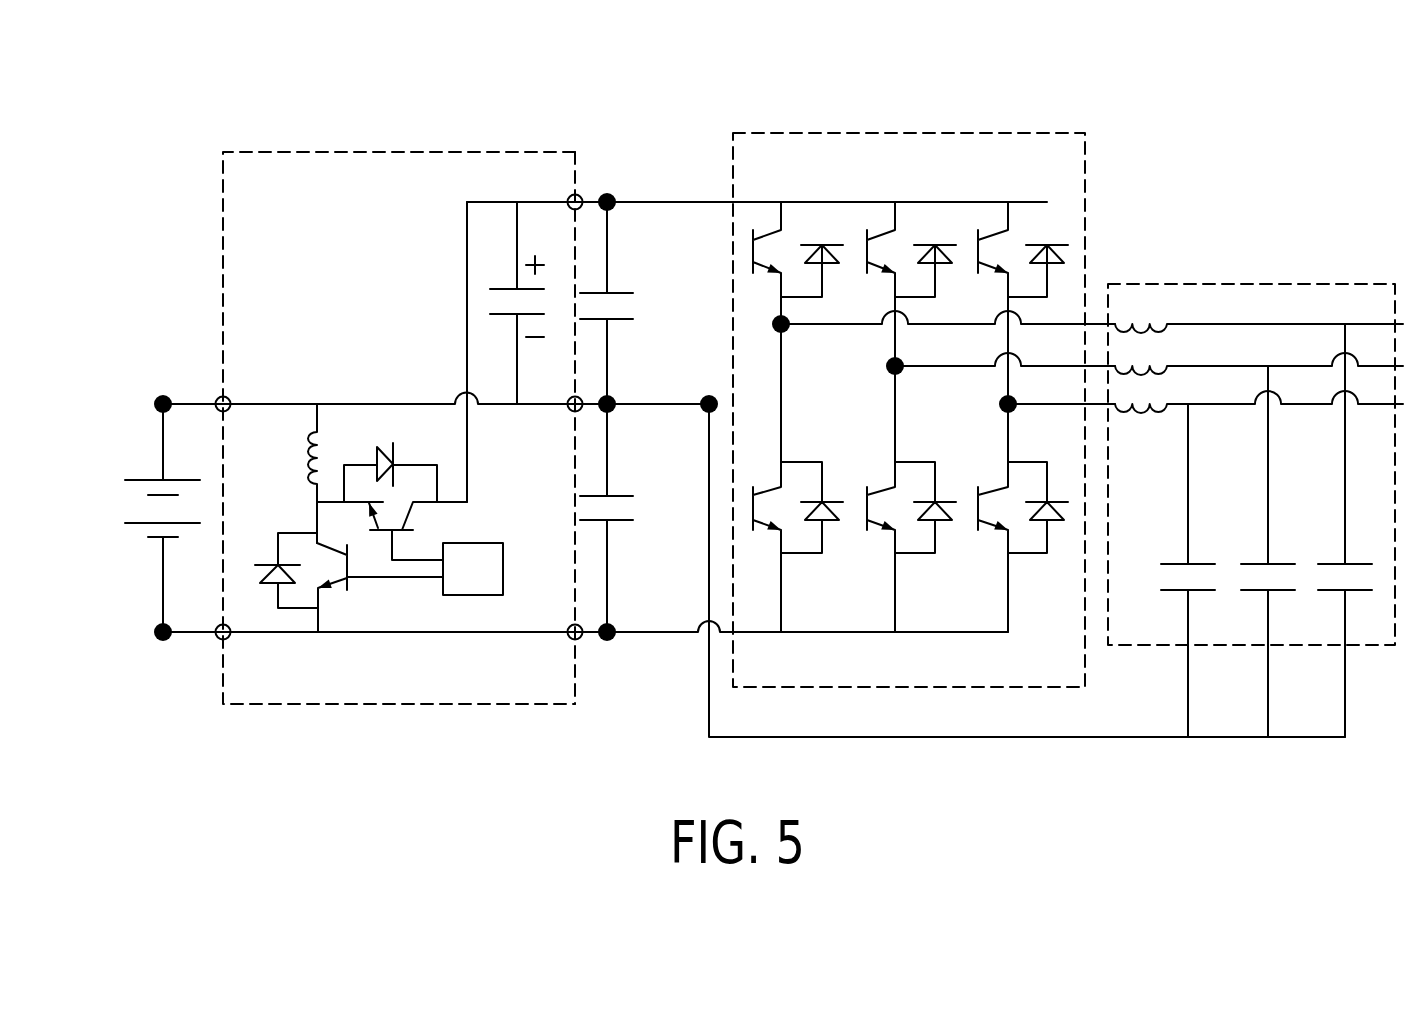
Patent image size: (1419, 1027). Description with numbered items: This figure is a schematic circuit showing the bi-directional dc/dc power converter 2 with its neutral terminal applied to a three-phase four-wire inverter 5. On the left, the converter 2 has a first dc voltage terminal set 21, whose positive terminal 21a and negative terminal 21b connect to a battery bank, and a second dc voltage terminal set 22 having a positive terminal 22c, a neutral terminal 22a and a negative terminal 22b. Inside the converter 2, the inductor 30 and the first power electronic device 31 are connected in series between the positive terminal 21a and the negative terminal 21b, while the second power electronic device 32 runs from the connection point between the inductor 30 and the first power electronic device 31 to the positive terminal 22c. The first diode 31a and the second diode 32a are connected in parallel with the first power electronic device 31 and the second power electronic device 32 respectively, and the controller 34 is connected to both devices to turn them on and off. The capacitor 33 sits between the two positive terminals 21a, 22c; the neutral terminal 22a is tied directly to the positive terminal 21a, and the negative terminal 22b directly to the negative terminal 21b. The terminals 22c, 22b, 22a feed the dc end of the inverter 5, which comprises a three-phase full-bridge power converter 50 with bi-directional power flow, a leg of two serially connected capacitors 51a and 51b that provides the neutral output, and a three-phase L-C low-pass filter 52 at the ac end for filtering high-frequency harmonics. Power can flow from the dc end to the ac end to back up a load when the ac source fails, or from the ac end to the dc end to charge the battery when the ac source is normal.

The bi-directional dc/dc power converter 2 is at (470, 152).
The three-phase four-wire inverter 5 is at (1060, 745).
The first dc voltage terminal set 21 is at (213, 472).
The positive terminal 21a is at (248, 390).
The negative terminal 21b is at (248, 647).
The second dc voltage terminal set 22 is at (575, 550).
The neutral terminal 22a is at (557, 419).
The negative terminal 22b is at (556, 651).
The positive terminal 22c is at (557, 218).
The inductor 30 is at (291, 473).
The first power electronic device 31 is at (380, 587).
The first diode 31a is at (276, 570).
The second power electronic device 32 is at (392, 531).
The second diode 32a is at (390, 458).
The capacitor 33 is at (511, 303).
The controller 34 is at (492, 569).
The three-phase full-bridge power converter 50 is at (924, 394).
The capacitor 51a is at (631, 298).
The capacitor 51b is at (632, 518).
The three-phase L-C low-pass filter 52 is at (1255, 493).